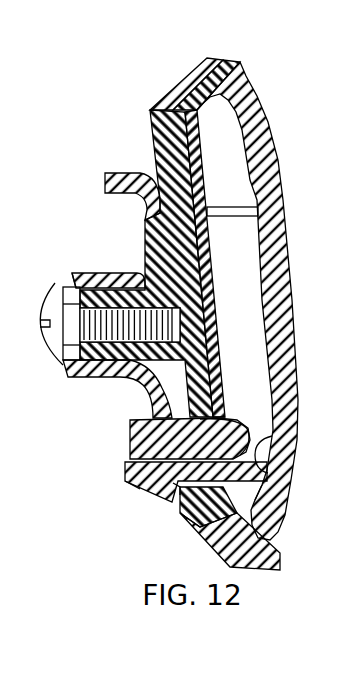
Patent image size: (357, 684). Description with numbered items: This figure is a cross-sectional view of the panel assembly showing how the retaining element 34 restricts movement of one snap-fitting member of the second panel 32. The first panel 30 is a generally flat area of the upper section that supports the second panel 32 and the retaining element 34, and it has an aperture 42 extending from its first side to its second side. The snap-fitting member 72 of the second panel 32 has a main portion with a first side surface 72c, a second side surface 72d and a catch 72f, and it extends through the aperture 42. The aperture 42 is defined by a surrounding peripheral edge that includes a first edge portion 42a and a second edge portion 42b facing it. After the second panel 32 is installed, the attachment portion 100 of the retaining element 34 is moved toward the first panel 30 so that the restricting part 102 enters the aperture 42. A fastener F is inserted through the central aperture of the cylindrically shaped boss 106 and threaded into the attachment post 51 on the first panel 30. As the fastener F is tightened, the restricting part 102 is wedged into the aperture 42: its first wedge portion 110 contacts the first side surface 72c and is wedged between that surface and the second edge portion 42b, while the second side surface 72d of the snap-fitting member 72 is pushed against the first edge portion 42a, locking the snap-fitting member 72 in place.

The first panel 30 is at (240, 51).
The second panel 32 is at (263, 170).
The retaining element 34 is at (69, 271).
The cylindrically shaped boss 106 is at (117, 277).
The fastener F is at (53, 308).
The attachment post 51 is at (108, 372).
The attachment portion 100 is at (152, 397).
The first wedge portion 110 is at (176, 428).
The restricting part 102 is at (240, 428).
The snap-fitting member 72 is at (133, 478).
The catch 72f is at (169, 499).
The first side surface 72c is at (273, 437).
The second side surface 72d is at (250, 487).
The aperture 42 is at (203, 483).
The first edge portion 42a is at (173, 503).
The second edge portion 42b is at (236, 418).